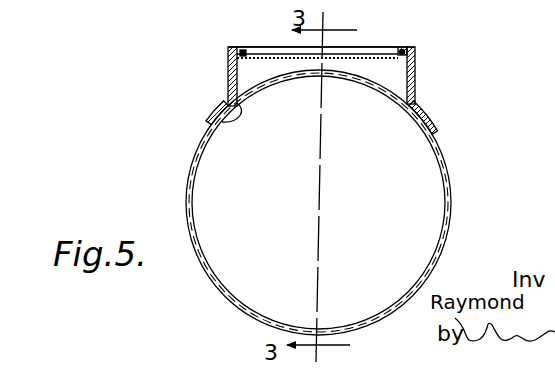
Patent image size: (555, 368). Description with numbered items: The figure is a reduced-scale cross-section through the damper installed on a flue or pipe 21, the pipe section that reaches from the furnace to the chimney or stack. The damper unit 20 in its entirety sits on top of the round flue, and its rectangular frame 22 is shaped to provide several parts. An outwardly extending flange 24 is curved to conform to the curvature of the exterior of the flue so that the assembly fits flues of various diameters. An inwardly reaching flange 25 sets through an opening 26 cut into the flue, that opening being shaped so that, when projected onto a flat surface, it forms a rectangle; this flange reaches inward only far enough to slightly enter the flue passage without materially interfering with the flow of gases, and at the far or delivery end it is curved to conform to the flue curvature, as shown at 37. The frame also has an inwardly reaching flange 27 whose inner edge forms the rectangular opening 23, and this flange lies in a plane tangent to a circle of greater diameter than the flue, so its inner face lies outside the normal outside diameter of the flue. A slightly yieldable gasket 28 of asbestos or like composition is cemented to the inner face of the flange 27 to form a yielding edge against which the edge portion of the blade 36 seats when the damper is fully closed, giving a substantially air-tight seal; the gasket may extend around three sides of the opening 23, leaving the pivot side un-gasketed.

The damper unit 20 is at (420, 53).
The flue or pipe 21 is at (449, 156).
The frame 22 is at (415, 78).
The rectangular opening 23 is at (401, 52).
The outwardly extending flange 24 is at (228, 80).
The inwardly reaching flange 25 is at (366, 84).
The opening cut into the flue 26 is at (212, 118).
The inwardly reaching flange 27 is at (243, 50).
The gasket 28 is at (234, 55).
The blade 36 is at (364, 57).
The curved portion of flange 37 is at (318, 202).